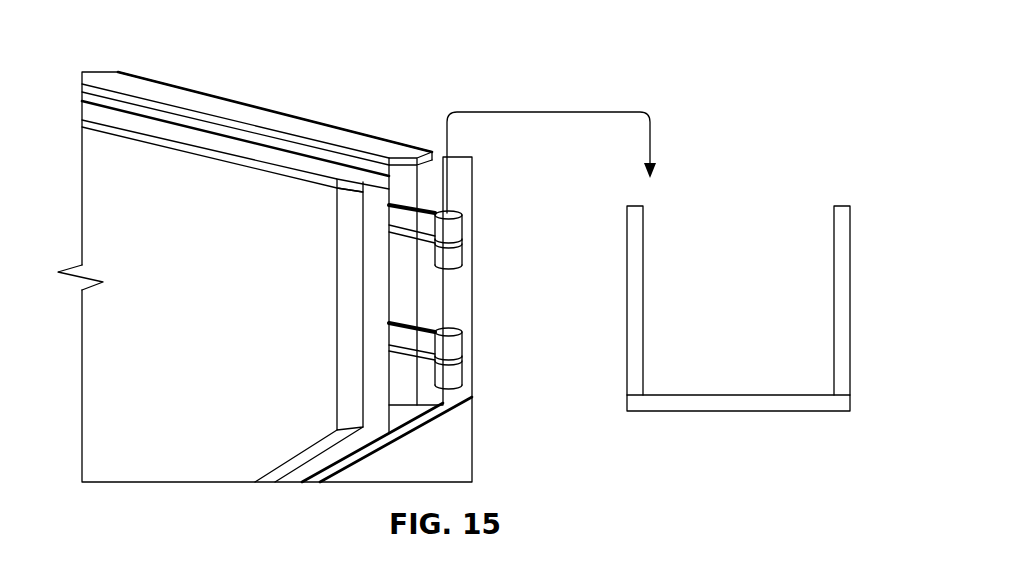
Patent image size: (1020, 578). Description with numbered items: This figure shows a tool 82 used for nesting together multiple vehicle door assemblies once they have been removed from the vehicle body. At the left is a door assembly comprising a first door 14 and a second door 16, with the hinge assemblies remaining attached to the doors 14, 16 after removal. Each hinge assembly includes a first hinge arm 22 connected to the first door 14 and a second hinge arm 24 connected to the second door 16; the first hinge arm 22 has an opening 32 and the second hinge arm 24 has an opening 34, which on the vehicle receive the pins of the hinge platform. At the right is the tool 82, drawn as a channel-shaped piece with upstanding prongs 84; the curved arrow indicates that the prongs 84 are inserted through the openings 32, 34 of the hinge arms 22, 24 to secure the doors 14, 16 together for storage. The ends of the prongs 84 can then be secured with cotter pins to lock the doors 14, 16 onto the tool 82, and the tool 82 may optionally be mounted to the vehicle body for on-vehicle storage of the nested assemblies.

The first door 14 is at (103, 372).
The second door 16 is at (178, 95).
The first hinge arm 22 is at (408, 223).
The second hinge arm 24 is at (417, 243).
The opening 32 is at (453, 220).
The opening 34 is at (455, 255).
The tool 82 is at (718, 402).
The prongs 84 is at (637, 292).